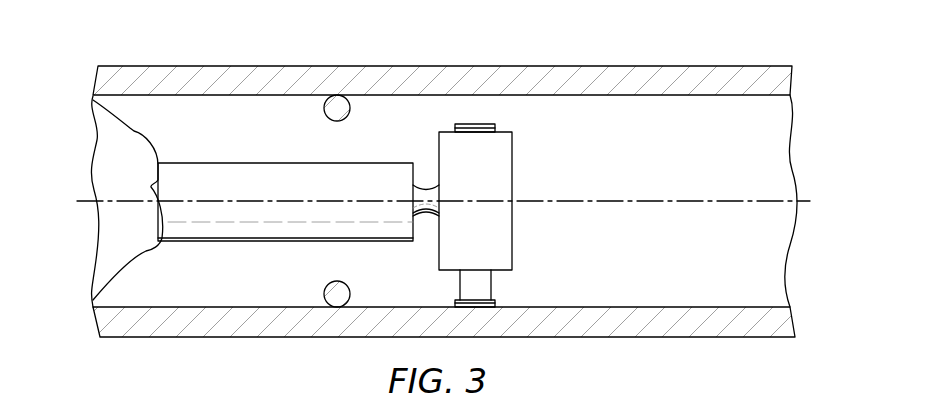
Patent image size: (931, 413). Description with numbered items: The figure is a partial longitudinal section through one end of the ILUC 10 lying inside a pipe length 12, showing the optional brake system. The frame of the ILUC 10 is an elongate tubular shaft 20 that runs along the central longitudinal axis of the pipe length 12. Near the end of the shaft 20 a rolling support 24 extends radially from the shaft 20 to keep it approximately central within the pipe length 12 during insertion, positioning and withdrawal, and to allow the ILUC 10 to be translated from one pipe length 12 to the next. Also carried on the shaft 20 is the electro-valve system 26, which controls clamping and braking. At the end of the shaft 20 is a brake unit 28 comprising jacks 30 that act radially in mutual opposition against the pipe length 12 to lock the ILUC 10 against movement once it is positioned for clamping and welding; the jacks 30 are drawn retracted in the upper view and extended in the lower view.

The ILUC 10 is at (78, 82).
The pipe length 12 is at (669, 74).
The shaft 20 is at (253, 163).
The rolling support 24 is at (338, 106).
The electro-valve system 26 is at (145, 251).
The brake unit 28 is at (505, 146).
The jack 30 is at (455, 127).